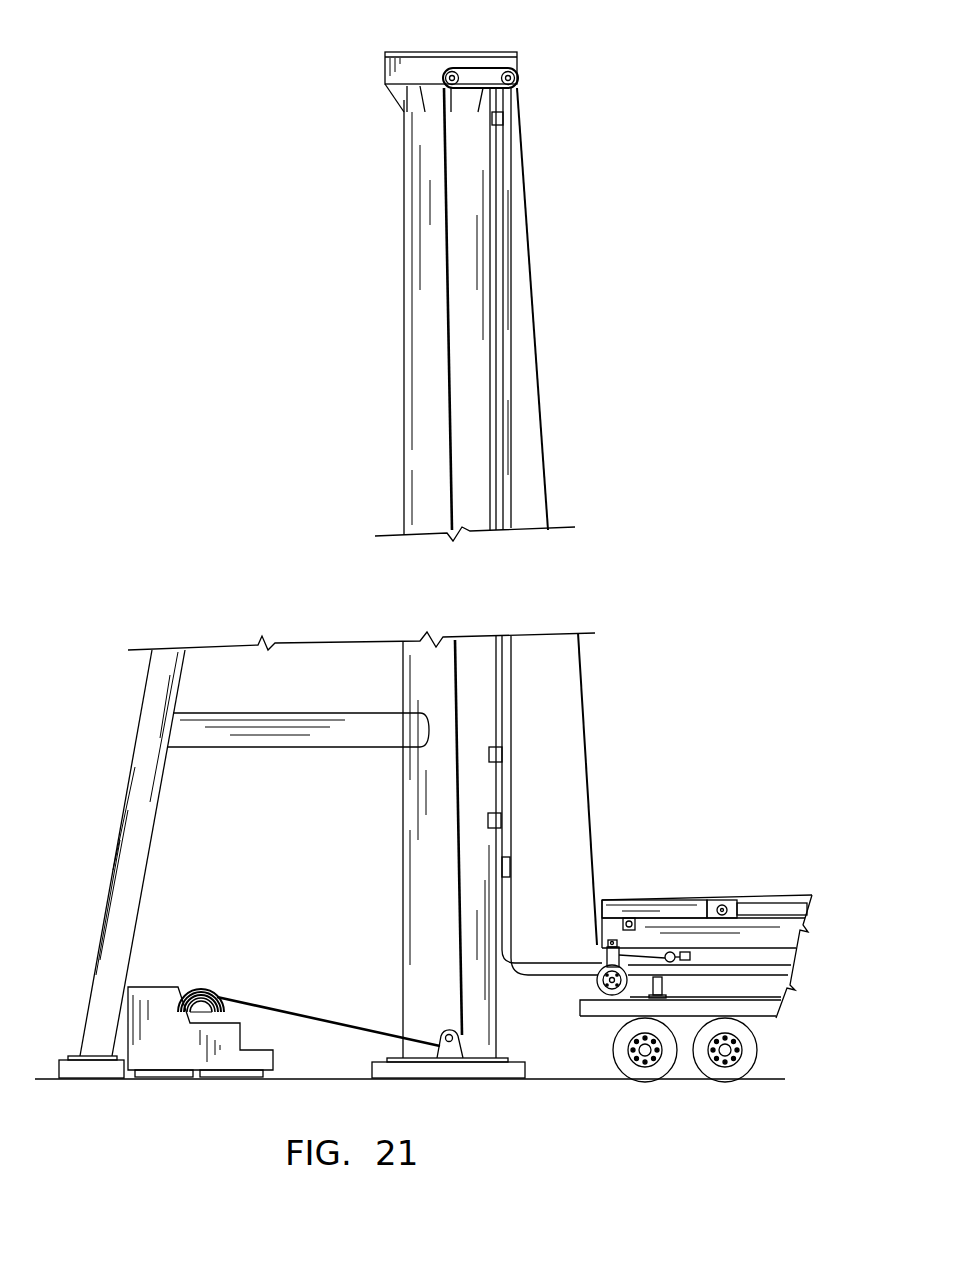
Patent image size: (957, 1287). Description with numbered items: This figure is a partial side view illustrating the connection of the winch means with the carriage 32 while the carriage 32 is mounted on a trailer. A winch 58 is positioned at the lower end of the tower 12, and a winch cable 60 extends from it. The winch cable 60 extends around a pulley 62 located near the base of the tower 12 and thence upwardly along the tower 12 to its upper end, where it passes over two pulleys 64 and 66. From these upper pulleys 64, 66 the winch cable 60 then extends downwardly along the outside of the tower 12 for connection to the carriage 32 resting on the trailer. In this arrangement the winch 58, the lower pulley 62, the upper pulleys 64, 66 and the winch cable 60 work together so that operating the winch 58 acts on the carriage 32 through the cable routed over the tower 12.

The tower 12 is at (400, 796).
The carriage 32 is at (688, 922).
The winch 58 is at (153, 981).
The winch cable 60 is at (307, 1016).
The pulley 62 is at (447, 1027).
The pulley 64 is at (459, 72).
The pulley 66 is at (516, 73).